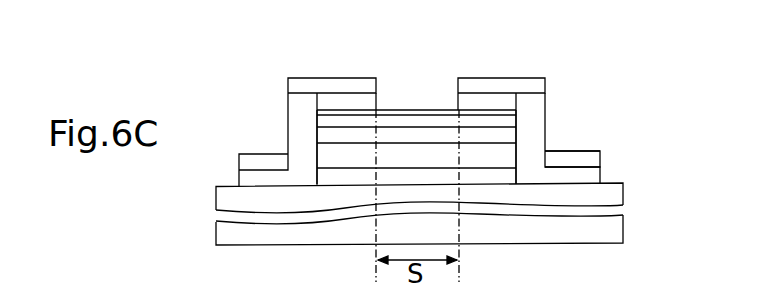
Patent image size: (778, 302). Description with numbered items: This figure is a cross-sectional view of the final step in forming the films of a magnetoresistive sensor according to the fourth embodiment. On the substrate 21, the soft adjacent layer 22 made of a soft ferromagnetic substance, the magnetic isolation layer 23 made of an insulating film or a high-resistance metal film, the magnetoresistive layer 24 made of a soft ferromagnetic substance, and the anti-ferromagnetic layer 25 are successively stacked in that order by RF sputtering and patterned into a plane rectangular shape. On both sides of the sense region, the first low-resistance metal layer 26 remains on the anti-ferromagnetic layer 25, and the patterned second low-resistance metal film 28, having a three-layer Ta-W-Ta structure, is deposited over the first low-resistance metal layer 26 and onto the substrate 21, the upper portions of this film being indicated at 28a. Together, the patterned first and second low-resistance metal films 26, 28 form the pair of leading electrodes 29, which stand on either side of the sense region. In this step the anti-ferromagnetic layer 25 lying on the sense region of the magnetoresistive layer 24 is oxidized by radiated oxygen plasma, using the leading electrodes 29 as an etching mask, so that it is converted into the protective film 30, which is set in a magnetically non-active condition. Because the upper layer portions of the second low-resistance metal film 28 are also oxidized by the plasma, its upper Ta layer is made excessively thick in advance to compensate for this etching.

The substrate 21 is at (613, 228).
The soft adjacent layer 22 is at (508, 177).
The magnetic isolation layer 23 is at (347, 160).
The magnetoresistive layer 24 is at (327, 135).
The anti-ferromagnetic layer 25 is at (328, 122).
The first low-resistance metal layer 26 is at (517, 112).
The second low-resistance metal film 28 is at (538, 133).
The electrode cap portion 28a is at (340, 83).
The leading electrodes 29 is at (466, 129).
The protective film 30 is at (408, 110).